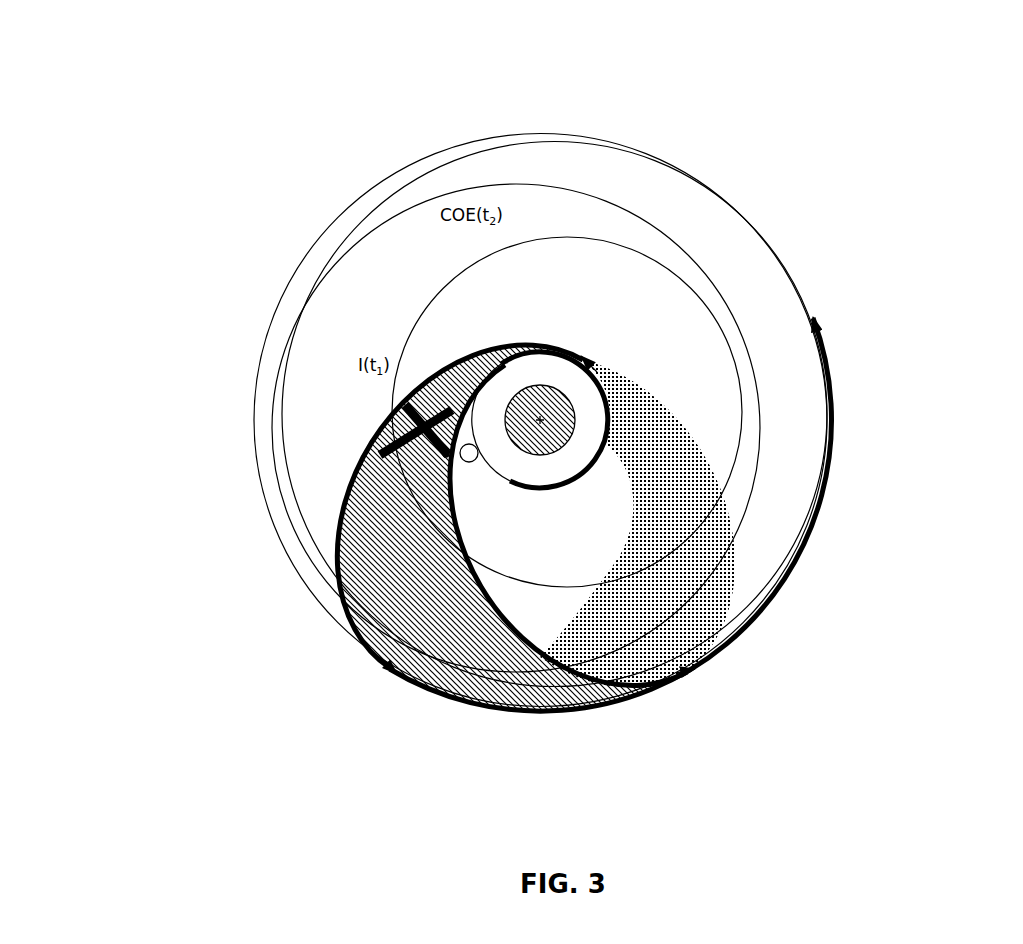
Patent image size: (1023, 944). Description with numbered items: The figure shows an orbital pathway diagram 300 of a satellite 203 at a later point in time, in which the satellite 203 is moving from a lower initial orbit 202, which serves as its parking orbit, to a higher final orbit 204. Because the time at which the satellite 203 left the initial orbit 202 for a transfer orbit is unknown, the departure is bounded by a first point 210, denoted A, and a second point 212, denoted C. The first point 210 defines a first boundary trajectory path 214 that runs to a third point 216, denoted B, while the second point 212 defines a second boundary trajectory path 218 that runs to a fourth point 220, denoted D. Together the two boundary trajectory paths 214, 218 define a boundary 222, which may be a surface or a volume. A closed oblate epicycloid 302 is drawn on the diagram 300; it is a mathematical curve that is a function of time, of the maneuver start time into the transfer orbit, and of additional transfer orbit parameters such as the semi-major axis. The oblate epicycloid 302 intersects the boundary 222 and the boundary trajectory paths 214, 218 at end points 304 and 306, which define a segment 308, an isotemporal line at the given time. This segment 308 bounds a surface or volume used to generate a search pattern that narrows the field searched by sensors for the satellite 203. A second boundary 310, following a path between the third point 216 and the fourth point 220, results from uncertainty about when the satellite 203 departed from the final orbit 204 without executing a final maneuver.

The initial orbit 202 is at (587, 476).
The satellite 203 is at (400, 405).
The final orbit 204 is at (320, 238).
The first point 210 is at (592, 350).
The second point 212 is at (506, 368).
The first boundary trajectory path 214 is at (352, 618).
The third point 216 is at (390, 678).
The second boundary trajectory path 218 is at (543, 583).
The fourth point 220 is at (689, 673).
The boundary 222 is at (443, 630).
The orbital pathway diagram 300 is at (803, 108).
The oblate epicycloid 302 is at (407, 182).
The end point 304 is at (405, 388).
The end point 306 is at (450, 462).
The segment 308 is at (460, 455).
The second boundary 310 is at (708, 600).